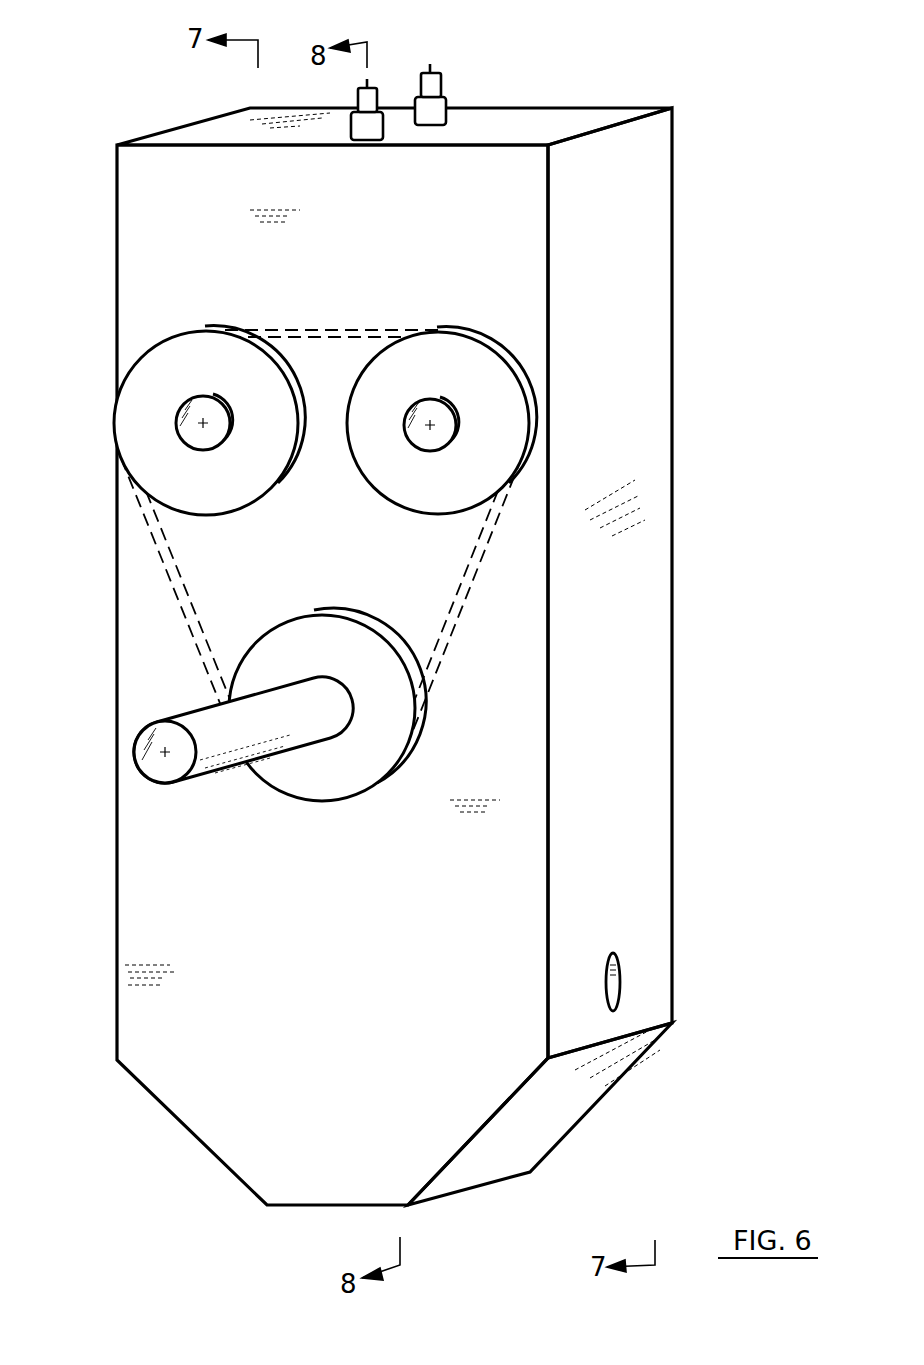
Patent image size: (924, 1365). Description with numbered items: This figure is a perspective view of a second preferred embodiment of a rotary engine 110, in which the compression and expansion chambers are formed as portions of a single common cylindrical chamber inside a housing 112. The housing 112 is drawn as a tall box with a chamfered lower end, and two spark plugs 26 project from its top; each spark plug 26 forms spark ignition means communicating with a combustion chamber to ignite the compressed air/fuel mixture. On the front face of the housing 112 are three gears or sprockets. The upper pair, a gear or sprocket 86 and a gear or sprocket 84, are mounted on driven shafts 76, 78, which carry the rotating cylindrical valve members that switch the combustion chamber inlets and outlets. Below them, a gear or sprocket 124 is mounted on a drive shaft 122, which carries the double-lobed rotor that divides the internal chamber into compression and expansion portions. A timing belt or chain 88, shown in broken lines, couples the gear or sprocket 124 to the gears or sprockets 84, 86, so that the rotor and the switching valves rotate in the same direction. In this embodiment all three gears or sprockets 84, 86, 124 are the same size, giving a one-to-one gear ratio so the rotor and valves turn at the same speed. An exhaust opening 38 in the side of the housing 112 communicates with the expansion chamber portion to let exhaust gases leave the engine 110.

The rotary engine 110 is at (397, 602).
The housing 112 is at (645, 583).
The spark plug 26 is at (380, 95).
The gear or sprocket 86 is at (162, 413).
The driven shaft 76 is at (200, 438).
The gear or sprocket 84 is at (559, 412).
The driven shaft 78 is at (437, 438).
The timing belt or chain 88 is at (172, 592).
The drive shaft 122 is at (210, 727).
The gear or sprocket 124 is at (310, 780).
The exhaust opening 38 is at (615, 990).